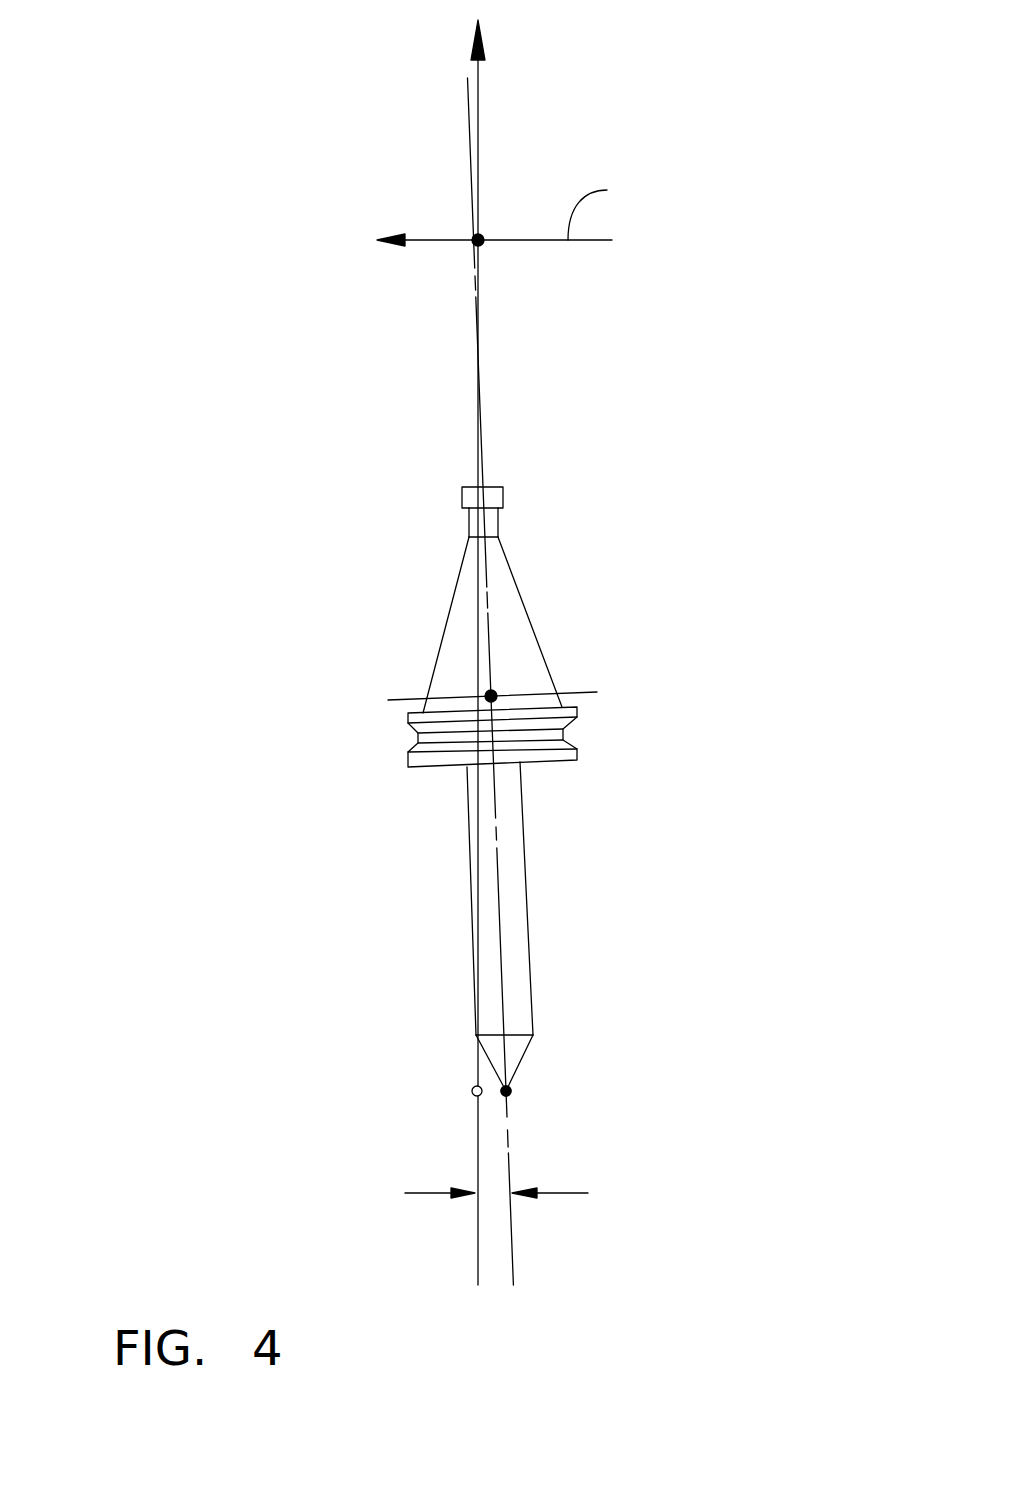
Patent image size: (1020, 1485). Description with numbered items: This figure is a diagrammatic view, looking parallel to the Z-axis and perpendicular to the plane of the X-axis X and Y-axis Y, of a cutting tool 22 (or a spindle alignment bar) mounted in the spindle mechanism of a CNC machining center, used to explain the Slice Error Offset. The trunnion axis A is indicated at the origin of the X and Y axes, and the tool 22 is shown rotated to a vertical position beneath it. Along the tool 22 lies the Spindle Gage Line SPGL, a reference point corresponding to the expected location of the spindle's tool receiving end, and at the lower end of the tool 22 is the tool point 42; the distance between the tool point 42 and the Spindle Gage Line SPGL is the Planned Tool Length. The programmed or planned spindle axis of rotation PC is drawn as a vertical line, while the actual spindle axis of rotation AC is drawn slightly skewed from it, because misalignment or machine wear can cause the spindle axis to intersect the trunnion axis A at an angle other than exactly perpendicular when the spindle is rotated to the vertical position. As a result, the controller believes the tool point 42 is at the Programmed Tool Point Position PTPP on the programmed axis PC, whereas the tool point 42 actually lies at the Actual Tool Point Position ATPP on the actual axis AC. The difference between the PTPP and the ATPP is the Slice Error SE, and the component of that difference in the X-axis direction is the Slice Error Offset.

The cutting tool 22 is at (525, 868).
The tool point 42 is at (508, 1093).
The Y-axis Y is at (468, 548).
The X-axis X is at (494, 223).
The trunnion axis A is at (601, 206).
The actual spindle axis of rotation AC is at (513, 1253).
The programmed spindle axis of rotation PC is at (477, 1260).
The Spindle Gage Line SPGL is at (583, 692).
The Programmed Tool Point Position PTPP is at (449, 1091).
The Actual Tool Point Position ATPP is at (536, 1091).
The Slice Error SE is at (515, 1194).